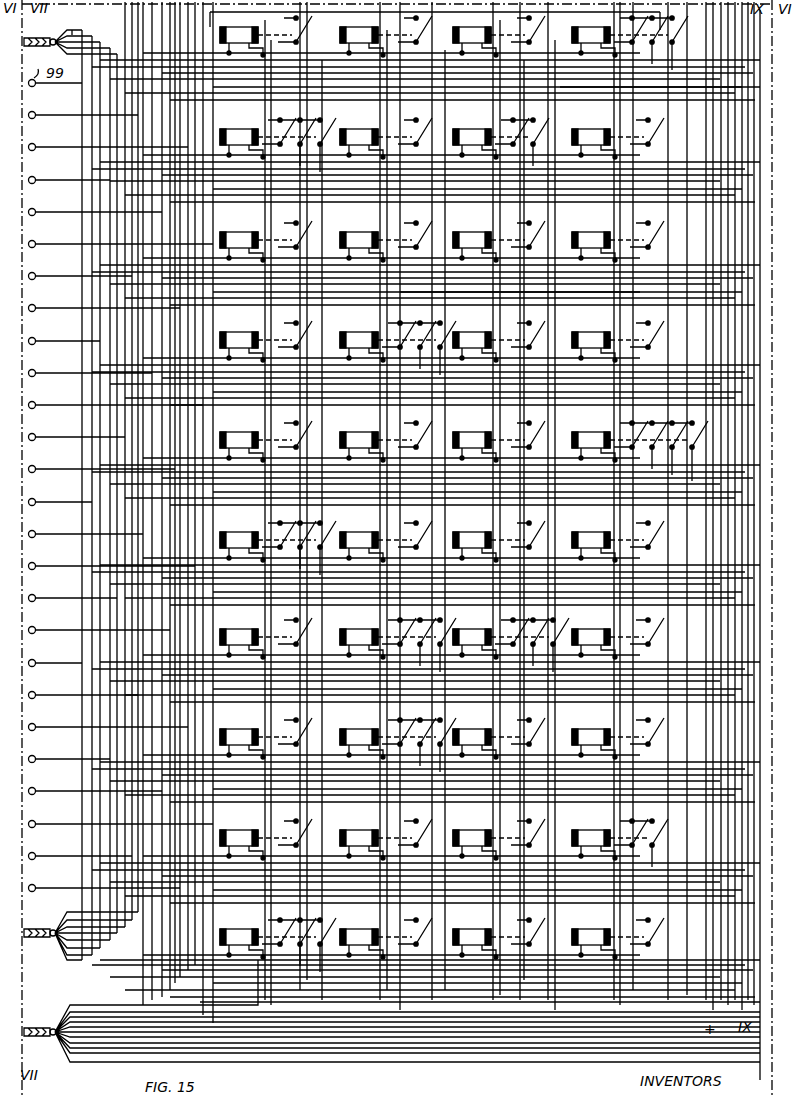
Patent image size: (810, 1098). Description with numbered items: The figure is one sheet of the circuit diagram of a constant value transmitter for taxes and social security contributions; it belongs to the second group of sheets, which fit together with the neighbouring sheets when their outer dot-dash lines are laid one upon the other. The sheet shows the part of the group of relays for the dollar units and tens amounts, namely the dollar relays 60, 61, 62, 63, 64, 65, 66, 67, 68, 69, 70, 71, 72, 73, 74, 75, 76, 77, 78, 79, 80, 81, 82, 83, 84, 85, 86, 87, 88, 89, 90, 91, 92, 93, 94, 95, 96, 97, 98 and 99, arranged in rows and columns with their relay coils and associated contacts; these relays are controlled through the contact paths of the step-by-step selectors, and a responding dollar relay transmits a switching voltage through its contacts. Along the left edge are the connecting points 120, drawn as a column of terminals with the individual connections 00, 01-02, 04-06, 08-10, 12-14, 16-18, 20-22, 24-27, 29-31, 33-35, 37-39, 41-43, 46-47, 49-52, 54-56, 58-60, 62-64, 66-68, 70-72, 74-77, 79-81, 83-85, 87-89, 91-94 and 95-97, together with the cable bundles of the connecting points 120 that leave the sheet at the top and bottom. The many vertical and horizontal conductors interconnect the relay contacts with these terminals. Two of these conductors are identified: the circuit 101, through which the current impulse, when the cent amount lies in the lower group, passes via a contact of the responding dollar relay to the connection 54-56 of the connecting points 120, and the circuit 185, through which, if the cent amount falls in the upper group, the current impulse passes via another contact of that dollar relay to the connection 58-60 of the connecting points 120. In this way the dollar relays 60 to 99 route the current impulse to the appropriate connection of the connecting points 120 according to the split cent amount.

The dollar relay 60 is at (618, 934).
The dollar relay 61 is at (620, 839).
The dollar relay 62 is at (618, 734).
The dollar relay 63 is at (618, 634).
The dollar relay 64 is at (618, 537).
The dollar relay 65 is at (640, 447).
The dollar relay 66 is at (618, 337).
The dollar relay 67 is at (618, 237).
The dollar relay 68 is at (618, 134).
The dollar relay 69 is at (630, 43).
The dollar relay 70 is at (499, 934).
The dollar relay 71 is at (499, 835).
The dollar relay 72 is at (499, 734).
The dollar relay 73 is at (511, 641).
The dollar relay 74 is at (499, 537).
The dollar relay 75 is at (499, 437).
The dollar relay 76 is at (499, 337).
The dollar relay 77 is at (499, 237).
The dollar relay 78 is at (501, 138).
The dollar relay 79 is at (499, 32).
The dollar relay 80 is at (386, 934).
The dollar relay 81 is at (386, 835).
The dollar relay 82 is at (398, 741).
The dollar relay 83 is at (398, 641).
The dollar relay 84 is at (386, 537).
The dollar relay 85 is at (386, 437).
The dollar relay 86 is at (398, 344).
The dollar relay 87 is at (386, 237).
The dollar relay 88 is at (386, 134).
The dollar relay 89 is at (386, 32).
The dollar relay 90 is at (278, 960).
The dollar relay 91 is at (266, 819).
The dollar relay 92 is at (266, 718).
The dollar relay 93 is at (266, 627).
The dollar relay 94 is at (278, 548).
The dollar relay 95 is at (266, 430).
The dollar relay 96 is at (266, 324).
The dollar relay 97 is at (266, 231).
The dollar relay 98 is at (278, 145).
The dollar relay 99 is at (266, 32).
The circuit 101 is at (453, 292).
The connecting points 120 is at (392, 546).
The circuit 185 is at (688, 87).
The connection of the connecting points 00 is at (105, 881).
The connection of the connecting points 01-02 is at (81, 849).
The connection of the connecting points 04-06 is at (121, 817).
The connection of the connecting points 08-10 is at (96, 784).
The connection of the connecting points 12-14 is at (70, 752).
The connection of the connecting points 16-18 is at (109, 720).
The connection of the connecting points 20-22 is at (84, 688).
The connection of the connecting points 24-27 is at (56, 656).
The connection of the connecting points 29-31 is at (100, 623).
The connection of the connecting points 33-35 is at (73, 591).
The connection of the connecting points 37-39 is at (112, 559).
The connection of the connecting points 41-43 is at (86, 527).
The connection of the connecting points 46-47 is at (61, 495).
The connection of the connecting points 49-52 is at (102, 462).
The connection of the connecting points 54-56 is at (77, 430).
The connection of the connecting points 58-60 is at (116, 398).
The connection of the connecting points 62-64 is at (91, 366).
The connection of the connecting points 66-68 is at (65, 334).
The connection of the connecting points 70-72 is at (105, 301).
The connection of the connecting points 74-77 is at (81, 269).
The connection of the connecting points 79-81 is at (121, 237).
The connection of the connecting points 83-85 is at (96, 205).
The connection of the connecting points 87-89 is at (70, 173).
The connection of the connecting points 91-94 is at (109, 140).
The connection of the connecting points 95-97 is at (84, 108).